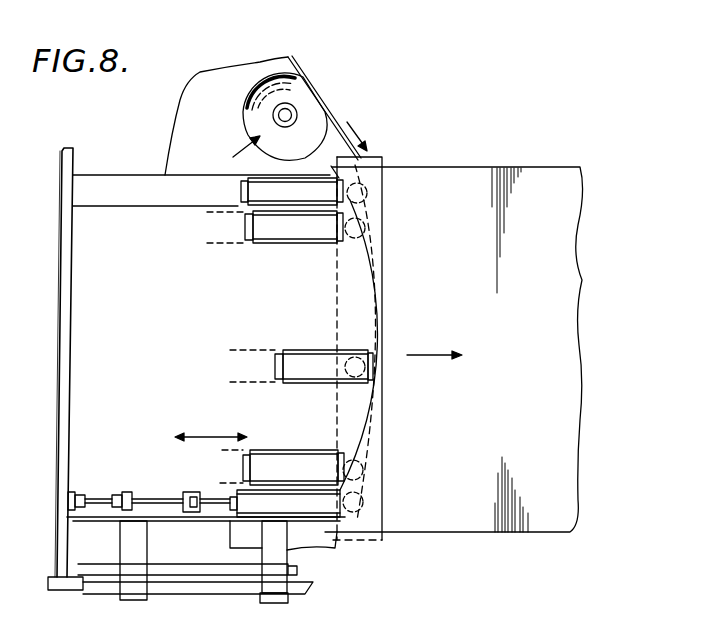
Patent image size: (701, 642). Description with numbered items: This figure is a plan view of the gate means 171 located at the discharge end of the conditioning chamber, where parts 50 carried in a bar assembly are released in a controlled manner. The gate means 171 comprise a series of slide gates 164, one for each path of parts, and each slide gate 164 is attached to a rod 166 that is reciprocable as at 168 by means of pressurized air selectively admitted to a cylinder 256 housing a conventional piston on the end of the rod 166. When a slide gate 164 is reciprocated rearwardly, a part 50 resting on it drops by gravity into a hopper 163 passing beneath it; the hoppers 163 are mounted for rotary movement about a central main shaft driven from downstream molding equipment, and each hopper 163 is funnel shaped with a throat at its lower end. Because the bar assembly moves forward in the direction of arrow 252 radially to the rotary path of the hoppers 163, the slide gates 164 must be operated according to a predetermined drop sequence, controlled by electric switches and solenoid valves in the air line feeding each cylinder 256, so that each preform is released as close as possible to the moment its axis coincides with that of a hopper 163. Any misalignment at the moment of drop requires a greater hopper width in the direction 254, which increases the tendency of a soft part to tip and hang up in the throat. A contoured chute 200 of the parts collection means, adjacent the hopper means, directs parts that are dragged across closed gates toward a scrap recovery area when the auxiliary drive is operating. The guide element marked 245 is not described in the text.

The part 50 is at (273, 113).
The hopper 163 is at (283, 93).
The slide gate 164 is at (325, 508).
The rod 166 is at (162, 505).
The reciprocation 168 is at (204, 437).
The gate means 171 is at (190, 278).
The contoured chute 200 is at (557, 323).
The guide frame 245 is at (386, 162).
The arrow 252 is at (414, 353).
The direction 254 is at (316, 91).
The cylinder 256 is at (107, 492).